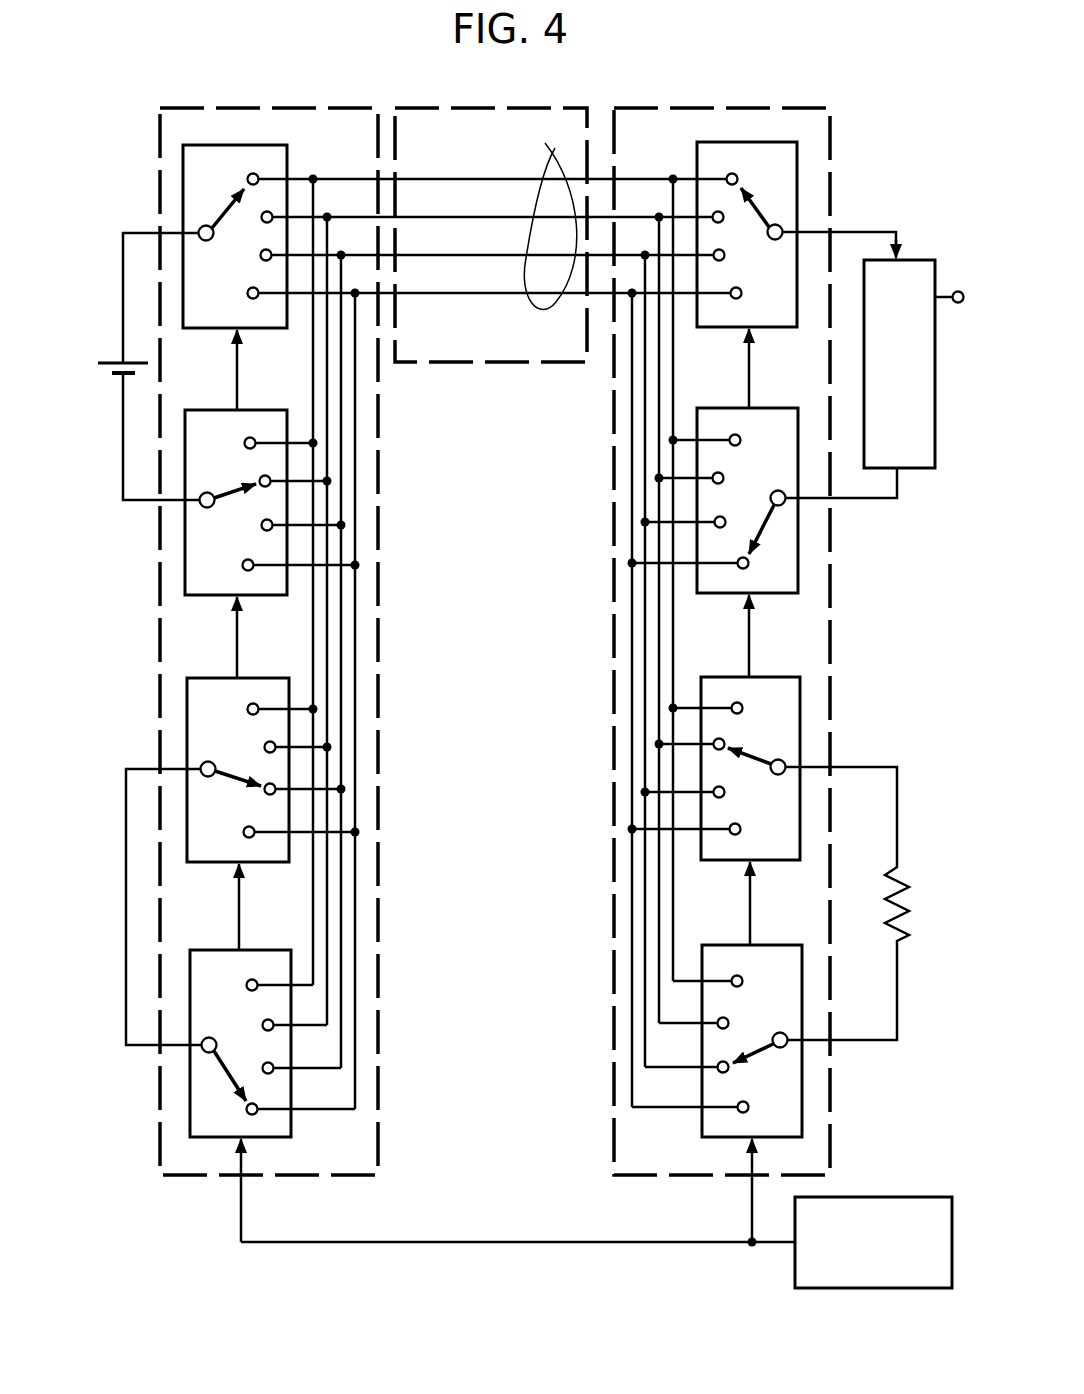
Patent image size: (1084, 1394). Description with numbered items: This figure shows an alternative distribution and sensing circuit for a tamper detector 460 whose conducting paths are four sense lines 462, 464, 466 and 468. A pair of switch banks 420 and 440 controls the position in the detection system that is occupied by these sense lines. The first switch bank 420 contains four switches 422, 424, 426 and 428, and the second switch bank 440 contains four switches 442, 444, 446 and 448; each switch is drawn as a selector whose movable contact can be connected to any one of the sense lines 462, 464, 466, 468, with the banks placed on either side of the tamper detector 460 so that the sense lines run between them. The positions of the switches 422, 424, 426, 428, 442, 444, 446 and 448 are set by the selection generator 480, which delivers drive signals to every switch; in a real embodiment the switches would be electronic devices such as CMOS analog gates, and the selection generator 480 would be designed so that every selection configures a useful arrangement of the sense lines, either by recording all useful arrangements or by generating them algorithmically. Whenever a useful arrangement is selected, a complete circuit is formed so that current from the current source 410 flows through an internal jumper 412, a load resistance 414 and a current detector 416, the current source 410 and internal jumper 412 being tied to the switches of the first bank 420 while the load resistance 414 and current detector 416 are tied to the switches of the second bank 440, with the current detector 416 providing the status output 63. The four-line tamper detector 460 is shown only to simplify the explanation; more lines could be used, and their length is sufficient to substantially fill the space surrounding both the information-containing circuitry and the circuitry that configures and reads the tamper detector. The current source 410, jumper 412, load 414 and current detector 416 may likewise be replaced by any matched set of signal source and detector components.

The current source 410 is at (113, 360).
The internal jumper 412 is at (123, 798).
The load resistance 414 is at (906, 937).
The current detector 416 is at (925, 470).
The switch bank 420 is at (348, 78).
The switch 422 is at (288, 160).
The switch 424 is at (265, 409).
The switch 426 is at (262, 681).
The switch 428 is at (265, 948).
The switch bank 440 is at (815, 76).
The switch 442 is at (697, 153).
The switch 444 is at (710, 408).
The switch 446 is at (727, 660).
The switch 448 is at (720, 945).
The tamper detector 460 is at (435, 363).
The sense line 462 is at (493, 181).
The sense line 464 is at (493, 219).
The sense line 466 is at (493, 257).
The sense line 468 is at (493, 295).
The selection generator 480 is at (891, 1197).
The status output terminal 63 is at (957, 291).